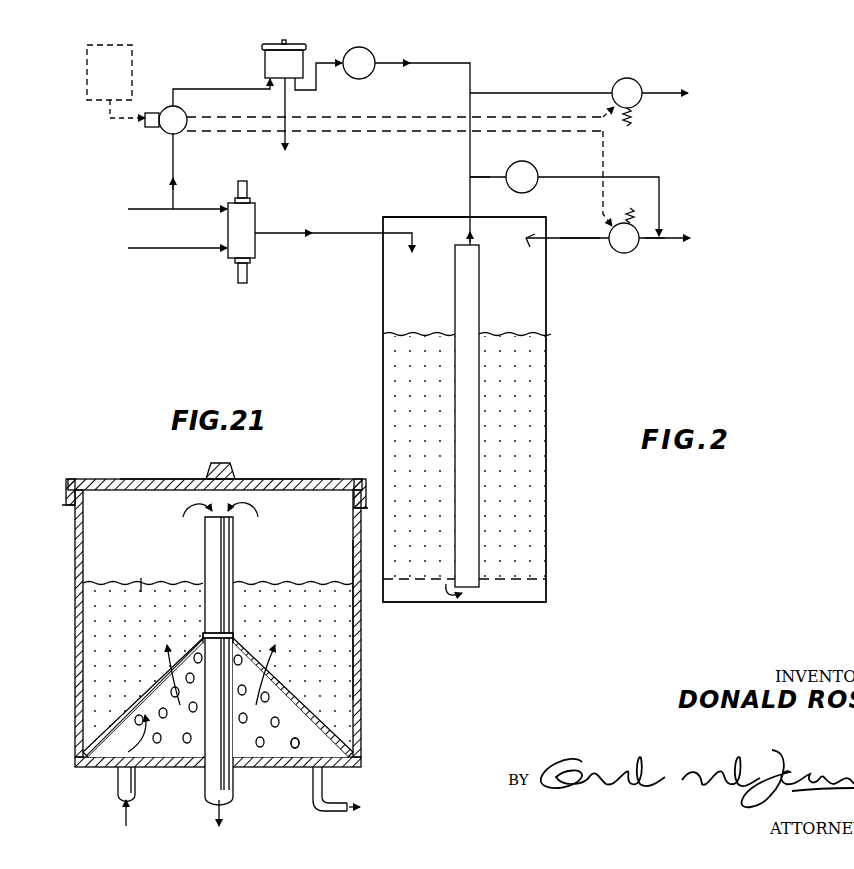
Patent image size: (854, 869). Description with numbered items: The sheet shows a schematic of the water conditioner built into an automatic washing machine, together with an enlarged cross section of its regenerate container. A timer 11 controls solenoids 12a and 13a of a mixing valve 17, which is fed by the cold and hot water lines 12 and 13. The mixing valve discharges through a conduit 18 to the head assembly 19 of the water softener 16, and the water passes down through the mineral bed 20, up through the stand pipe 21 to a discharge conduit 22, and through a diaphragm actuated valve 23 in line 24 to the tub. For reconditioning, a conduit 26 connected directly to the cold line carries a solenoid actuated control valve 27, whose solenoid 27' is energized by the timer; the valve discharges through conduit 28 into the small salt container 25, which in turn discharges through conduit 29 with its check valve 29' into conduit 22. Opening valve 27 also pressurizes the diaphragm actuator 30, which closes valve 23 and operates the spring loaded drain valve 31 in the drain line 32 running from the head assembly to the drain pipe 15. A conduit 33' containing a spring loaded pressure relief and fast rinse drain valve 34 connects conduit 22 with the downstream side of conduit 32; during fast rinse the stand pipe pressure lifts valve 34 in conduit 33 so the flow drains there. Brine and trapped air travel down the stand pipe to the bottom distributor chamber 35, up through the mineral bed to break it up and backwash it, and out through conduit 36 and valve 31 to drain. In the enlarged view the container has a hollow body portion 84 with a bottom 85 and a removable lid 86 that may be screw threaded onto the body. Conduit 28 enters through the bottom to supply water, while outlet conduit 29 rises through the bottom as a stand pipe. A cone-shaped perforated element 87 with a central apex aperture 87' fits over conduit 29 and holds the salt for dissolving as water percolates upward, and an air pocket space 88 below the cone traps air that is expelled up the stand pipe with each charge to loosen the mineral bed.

In FIG. 2, the timer 11 is at (87, 78).
In FIG. 2, the cold water line 12 is at (141, 212).
In FIG. 2, the solenoid 12a is at (238, 190).
In FIG. 2, the hot water line 13 is at (141, 246).
In FIG. 2, the solenoid 13a is at (238, 280).
In FIG. 2, the drain pipe 15 is at (675, 236).
In FIG. 2, the water softener 16 is at (553, 329).
In FIG. 2, the mixing valve 17 is at (236, 234).
In FIG. 2, the conduit 18 is at (327, 237).
In FIG. 2, the head assembly 19 is at (429, 215).
In FIG. 2, the mineral bed 20 is at (546, 405).
In FIG. 2, the stand pipe 21 is at (455, 298).
In FIG. 2, the discharge conduit 22 is at (468, 172).
In FIG. 2, the diaphragm actuated valve 23 is at (626, 79).
In FIG. 2, the line 24 is at (664, 96).
In FIG. 2, the salt container 25 is at (278, 62).
In FIG. 21, the salt container 25 is at (142, 478).
In FIG. 2, the conduit 26 is at (170, 160).
In FIG. 2, the solenoid actuated control valve 27 is at (166, 109).
In FIG. 2, the solenoid 27' is at (135, 131).
In FIG. 2, the conduit 28 is at (215, 89).
In FIG. 21, the conduit 28 is at (118, 794).
In FIG. 2, the conduit 29 is at (422, 141).
In FIG. 21, the conduit 29 is at (198, 671).
In FIG. 2, the check valve 29' is at (359, 48).
In FIG. 2, the diaphragm 30 is at (451, 117).
In FIG. 2, the spring loaded drain valve 31 is at (624, 253).
In FIG. 2, the drain line 32 is at (657, 235).
In FIG. 2, the conduit 33 is at (541, 82).
In FIG. 2, the conduit 33' is at (485, 195).
In FIG. 2, the spring loaded pressure relief and fast rinse drain valve 34 is at (514, 166).
In FIG. 2, the bottom distributor chamber 35 is at (535, 592).
In FIG. 2, the conduit 36 is at (582, 234).
In FIG. 21, the hollow body portion 84 is at (360, 646).
In FIG. 21, the bottom 85 is at (303, 770).
In FIG. 21, the lid 86 is at (280, 479).
In FIG. 21, the cone-shaped perforated element 87 is at (218, 695).
In FIG. 21, the central apex aperture 87' is at (235, 634).
In FIG. 21, the air pocket space 88 is at (297, 740).